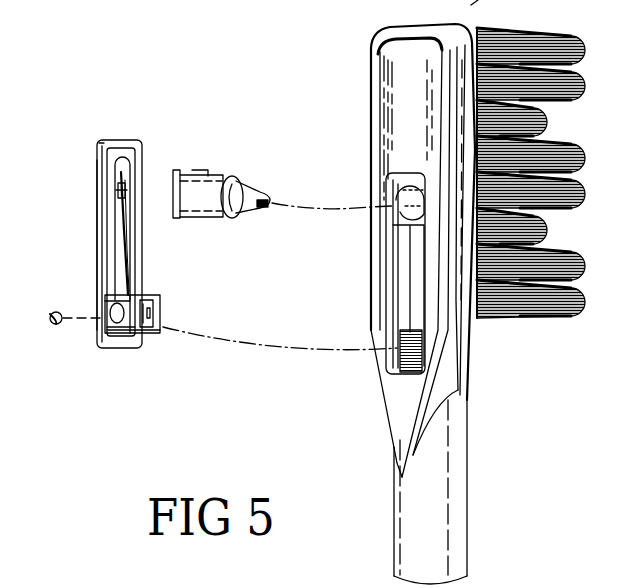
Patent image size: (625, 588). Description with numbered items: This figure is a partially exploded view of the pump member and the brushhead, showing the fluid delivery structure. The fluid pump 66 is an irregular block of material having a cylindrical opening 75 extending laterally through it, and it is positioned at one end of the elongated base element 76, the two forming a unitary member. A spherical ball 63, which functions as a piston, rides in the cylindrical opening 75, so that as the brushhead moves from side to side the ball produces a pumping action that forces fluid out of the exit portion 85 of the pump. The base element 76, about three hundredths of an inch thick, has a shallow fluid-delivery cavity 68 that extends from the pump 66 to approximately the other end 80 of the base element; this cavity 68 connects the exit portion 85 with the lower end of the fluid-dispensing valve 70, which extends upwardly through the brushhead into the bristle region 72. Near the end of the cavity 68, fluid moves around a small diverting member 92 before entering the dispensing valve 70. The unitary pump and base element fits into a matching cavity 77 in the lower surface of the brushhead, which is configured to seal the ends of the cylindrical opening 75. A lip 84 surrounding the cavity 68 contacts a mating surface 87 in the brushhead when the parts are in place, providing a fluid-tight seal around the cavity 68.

The spherical ball 63 is at (59, 326).
The fluid pump 66 is at (153, 328).
The fluid-delivery cavity 68 is at (128, 257).
The fluid-dispensing valve 70 is at (232, 181).
The bristle region 72 is at (585, 145).
The cylindrical opening 75 is at (110, 312).
The base element 76 is at (98, 226).
The cavity 77 is at (397, 283).
The other end 80 is at (123, 140).
The lip 84 is at (98, 168).
The exit portion 85 is at (162, 312).
The mating surface 87 is at (393, 308).
The diverting member 92 is at (125, 190).